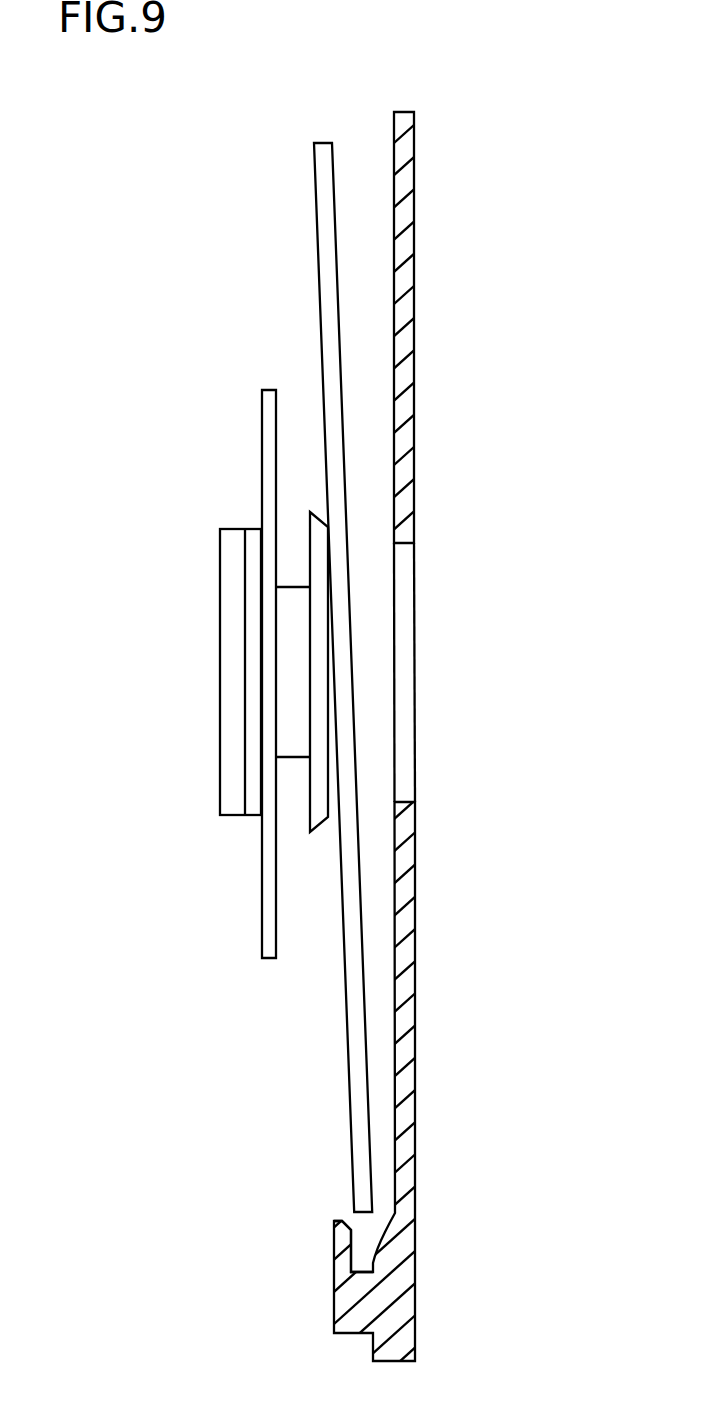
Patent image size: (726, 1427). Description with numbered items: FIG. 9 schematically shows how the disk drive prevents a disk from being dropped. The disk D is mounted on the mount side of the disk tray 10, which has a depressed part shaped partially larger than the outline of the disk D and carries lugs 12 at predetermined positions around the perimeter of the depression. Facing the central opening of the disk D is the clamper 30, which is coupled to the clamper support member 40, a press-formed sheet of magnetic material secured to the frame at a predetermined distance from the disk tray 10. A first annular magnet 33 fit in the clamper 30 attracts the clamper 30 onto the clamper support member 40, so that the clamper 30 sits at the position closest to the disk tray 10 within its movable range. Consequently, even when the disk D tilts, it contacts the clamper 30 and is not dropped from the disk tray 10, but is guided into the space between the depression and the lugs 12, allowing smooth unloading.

The disk tray 10 is at (405, 1100).
The lug 12 is at (335, 1247).
The clamper 30 is at (237, 515).
The first annular magnet 33 is at (253, 793).
The clamper support member 40 is at (264, 928).
The disk D is at (326, 249).